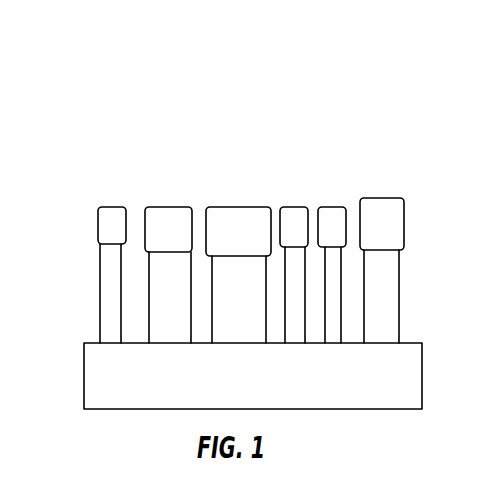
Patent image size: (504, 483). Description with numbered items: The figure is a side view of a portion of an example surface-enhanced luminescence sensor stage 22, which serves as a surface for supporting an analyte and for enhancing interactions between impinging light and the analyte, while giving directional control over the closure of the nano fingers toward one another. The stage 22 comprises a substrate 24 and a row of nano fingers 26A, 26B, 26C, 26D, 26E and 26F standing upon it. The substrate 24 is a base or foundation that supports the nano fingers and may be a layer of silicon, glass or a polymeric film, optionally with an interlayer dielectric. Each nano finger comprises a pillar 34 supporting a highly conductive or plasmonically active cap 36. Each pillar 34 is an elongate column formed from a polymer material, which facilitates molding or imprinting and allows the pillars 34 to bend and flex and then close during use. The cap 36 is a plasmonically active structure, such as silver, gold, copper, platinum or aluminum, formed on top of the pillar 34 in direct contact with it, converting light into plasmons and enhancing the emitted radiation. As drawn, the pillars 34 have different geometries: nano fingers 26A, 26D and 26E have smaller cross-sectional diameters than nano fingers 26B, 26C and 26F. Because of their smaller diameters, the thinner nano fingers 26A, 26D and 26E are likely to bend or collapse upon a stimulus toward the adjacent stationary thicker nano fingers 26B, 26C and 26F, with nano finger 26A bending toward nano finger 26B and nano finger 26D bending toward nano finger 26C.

The SEL sensor stage 22 is at (214, 77).
The substrate 24 is at (422, 380).
The nano finger 26A is at (107, 207).
The nano finger 26B is at (172, 207).
The nano finger 26C is at (233, 207).
The nano finger 26D is at (295, 207).
The nano finger 26E is at (334, 207).
The nano finger 26F is at (379, 198).
The pillar 34 is at (100, 307).
The cap 36 is at (113, 207).